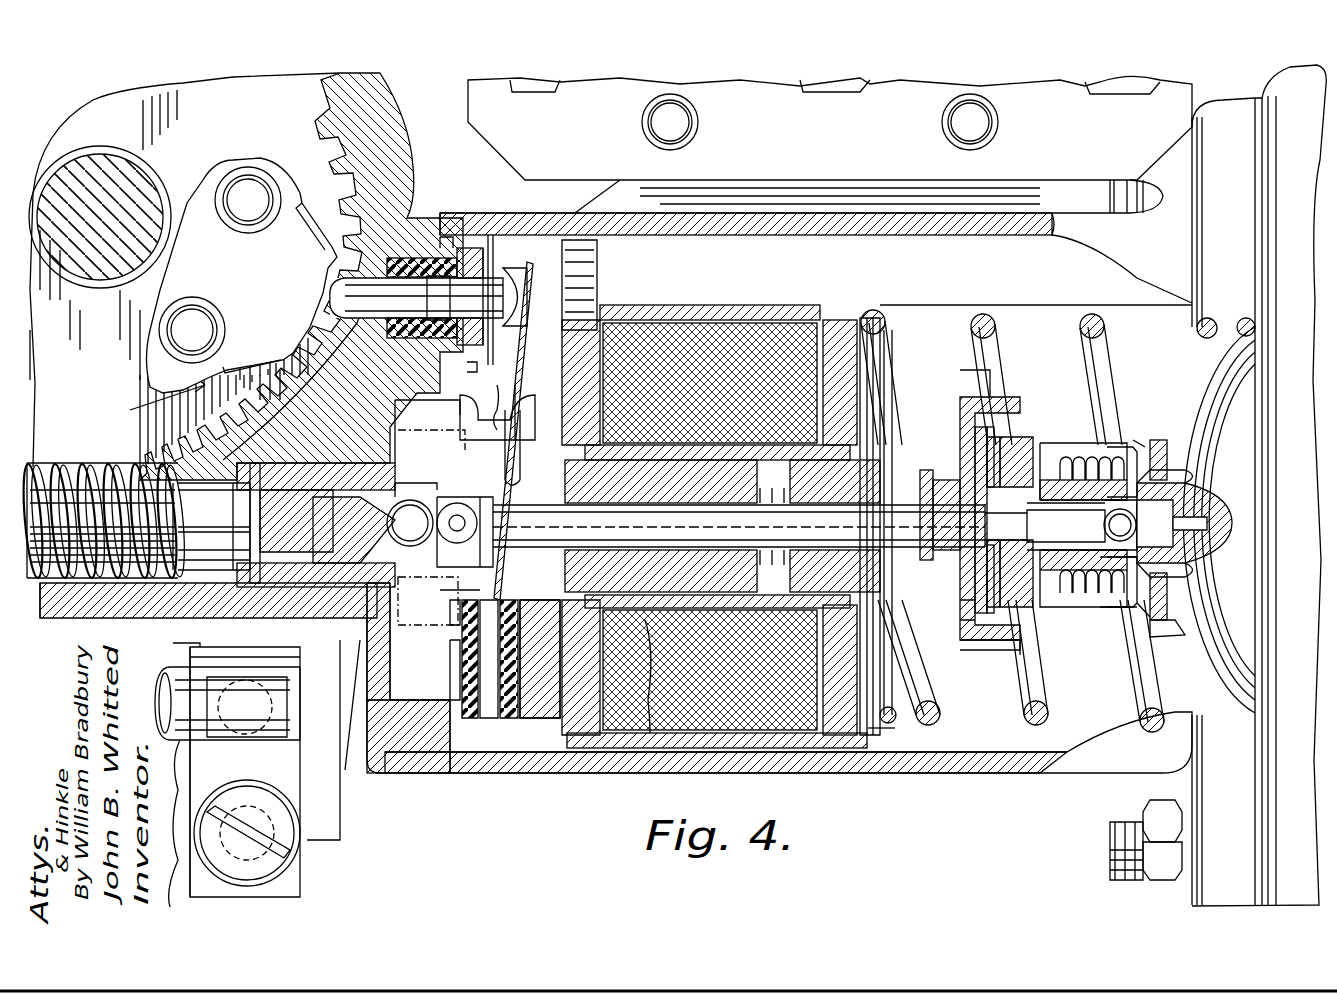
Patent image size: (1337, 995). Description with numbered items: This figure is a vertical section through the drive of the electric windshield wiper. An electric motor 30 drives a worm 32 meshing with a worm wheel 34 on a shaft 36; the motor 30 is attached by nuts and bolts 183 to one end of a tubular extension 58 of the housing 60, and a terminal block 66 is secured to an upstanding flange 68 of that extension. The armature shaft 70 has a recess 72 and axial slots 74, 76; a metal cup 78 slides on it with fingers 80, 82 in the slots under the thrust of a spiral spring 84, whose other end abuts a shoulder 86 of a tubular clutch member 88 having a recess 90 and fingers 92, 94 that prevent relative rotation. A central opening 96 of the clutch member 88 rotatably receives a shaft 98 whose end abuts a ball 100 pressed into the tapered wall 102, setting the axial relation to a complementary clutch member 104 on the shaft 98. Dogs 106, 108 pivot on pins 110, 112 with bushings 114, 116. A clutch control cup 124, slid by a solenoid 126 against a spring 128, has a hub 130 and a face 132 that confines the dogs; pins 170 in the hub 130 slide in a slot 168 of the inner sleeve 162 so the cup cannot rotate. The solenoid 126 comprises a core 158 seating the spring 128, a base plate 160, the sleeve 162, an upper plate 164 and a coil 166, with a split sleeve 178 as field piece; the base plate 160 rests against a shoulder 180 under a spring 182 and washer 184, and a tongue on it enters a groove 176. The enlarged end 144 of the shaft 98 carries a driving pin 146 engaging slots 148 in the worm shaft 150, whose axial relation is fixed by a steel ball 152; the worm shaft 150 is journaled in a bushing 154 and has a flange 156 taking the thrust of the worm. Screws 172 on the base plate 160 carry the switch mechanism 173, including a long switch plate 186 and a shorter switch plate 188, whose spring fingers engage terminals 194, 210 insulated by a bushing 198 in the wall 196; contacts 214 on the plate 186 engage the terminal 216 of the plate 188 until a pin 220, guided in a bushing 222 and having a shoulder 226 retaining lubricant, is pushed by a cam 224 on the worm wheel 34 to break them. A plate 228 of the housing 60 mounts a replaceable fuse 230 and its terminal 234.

The electric motor 30 is at (1250, 418).
The worm 32 is at (62, 468).
The worm wheel 34 is at (102, 374).
The shaft 36 is at (90, 170).
The tubular extension 58 is at (985, 770).
The housing 60 is at (720, 198).
The terminal block 66 is at (1028, 105).
The upstanding flange 68 is at (590, 198).
The armature shaft 70 is at (1195, 490).
The recess 72 is at (1175, 547).
The axially extending slot 74 is at (1085, 570).
The axially extending slot 76 is at (1085, 460).
The metal cup 78 is at (1120, 610).
The finger 80 is at (1175, 585).
The finger 82 is at (1160, 480).
The spiral spring 84 is at (1095, 455).
The shoulder 86 is at (1115, 605).
The tubular clutch member 88 is at (1135, 620).
The recess 90 is at (1140, 625).
The finger 92 is at (1180, 625).
The finger 94 is at (1139, 434).
The central opening 96 is at (996, 450).
The shaft 98 is at (960, 440).
The ball 100 is at (1140, 522).
The tapered wall 102 is at (1125, 510).
The complementary clutch member 104 is at (990, 620).
The dog 106 is at (985, 688).
The dog 108 is at (1040, 450).
The pin 110 is at (978, 360).
The pin 112 is at (973, 632).
The bushing 114 is at (1066, 526).
The bushing 116 is at (1006, 526).
The cup 124 is at (970, 368).
The solenoid 126 is at (710, 330).
The spring 128 is at (752, 548).
The hub 130 is at (865, 583).
The face 132 is at (1010, 660).
The enlarged ball-like end 144 is at (428, 601).
The driving pin 146 is at (455, 505).
The slots 148 is at (480, 505).
The worm shaft 150 is at (230, 545).
The steel ball 152 is at (340, 740).
The bushing 154 is at (335, 600).
The flange 156 is at (200, 445).
The core 158 is at (575, 483).
The base plate 160 is at (580, 750).
The inner sleeve 162 is at (583, 740).
The upper plate 164 is at (840, 745).
The coil 166 is at (758, 688).
The slot 168 is at (890, 738).
The pins 170 is at (905, 330).
The screws 172 is at (418, 680).
The automatic switch mechanism 173 is at (480, 770).
The groove 176 is at (555, 300).
The split sleeve 178 is at (680, 745).
The shoulder 180 is at (510, 760).
The spring 182 is at (930, 740).
The nuts and bolts 183 is at (1130, 855).
The washer 184 is at (868, 745).
The long switch plate 186 is at (483, 275).
The switch plate 188 is at (427, 431).
The electrical terminal 194 is at (478, 446).
The wall 196 is at (403, 728).
The bushing 198 is at (305, 495).
The second terminal 210 is at (490, 596).
The terminals 214 is at (486, 368).
The terminal 216 is at (500, 450).
The pin 220 is at (440, 240).
The bushing 222 is at (400, 295).
The cam 224 is at (330, 296).
The shoulder 226 is at (485, 260).
The plate 228 is at (234, 784).
The replaceable fuse 230 is at (175, 672).
The terminal 234 is at (258, 880).